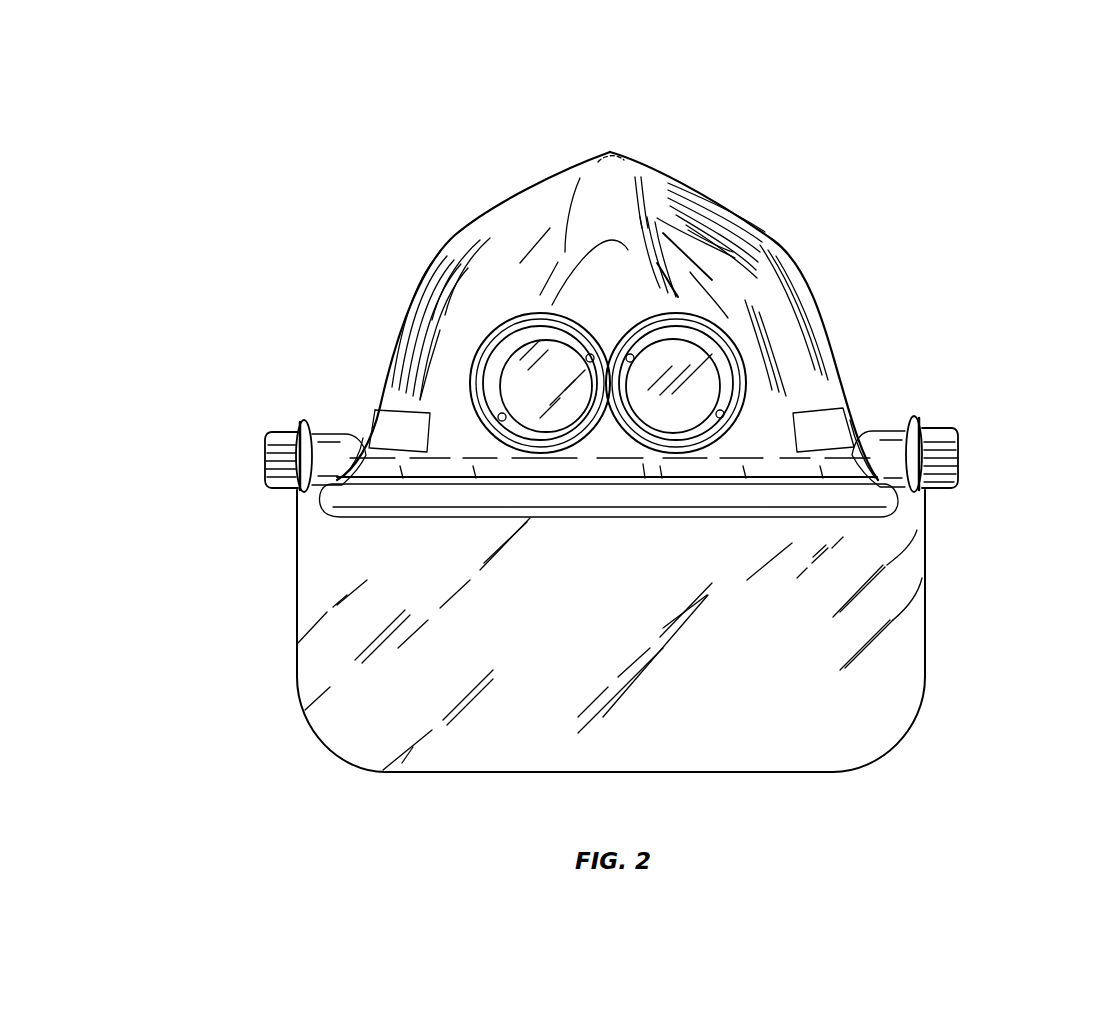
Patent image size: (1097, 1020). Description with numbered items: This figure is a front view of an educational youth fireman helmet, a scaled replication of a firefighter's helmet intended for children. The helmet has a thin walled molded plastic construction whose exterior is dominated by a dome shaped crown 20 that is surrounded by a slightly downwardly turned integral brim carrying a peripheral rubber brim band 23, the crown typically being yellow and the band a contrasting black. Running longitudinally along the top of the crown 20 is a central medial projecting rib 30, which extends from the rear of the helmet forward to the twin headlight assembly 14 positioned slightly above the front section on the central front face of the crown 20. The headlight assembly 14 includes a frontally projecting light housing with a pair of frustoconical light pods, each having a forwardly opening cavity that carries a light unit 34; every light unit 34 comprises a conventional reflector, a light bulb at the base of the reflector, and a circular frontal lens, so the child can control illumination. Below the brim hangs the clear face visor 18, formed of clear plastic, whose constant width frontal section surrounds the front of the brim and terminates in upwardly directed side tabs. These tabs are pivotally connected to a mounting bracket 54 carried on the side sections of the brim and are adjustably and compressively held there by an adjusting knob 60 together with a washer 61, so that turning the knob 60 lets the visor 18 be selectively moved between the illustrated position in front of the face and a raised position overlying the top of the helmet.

The twin headlight assembly 14 is at (486, 341).
The clear face visor 18 is at (928, 655).
The dome shaped crown 20 is at (773, 240).
The rubber brim band 23 is at (381, 425).
The central medial projecting rib 30 is at (617, 148).
The light unit 34 is at (505, 380).
The mounting bracket 54 is at (885, 420).
The adjusting knob 60 is at (960, 443).
The washer 61 is at (925, 488).